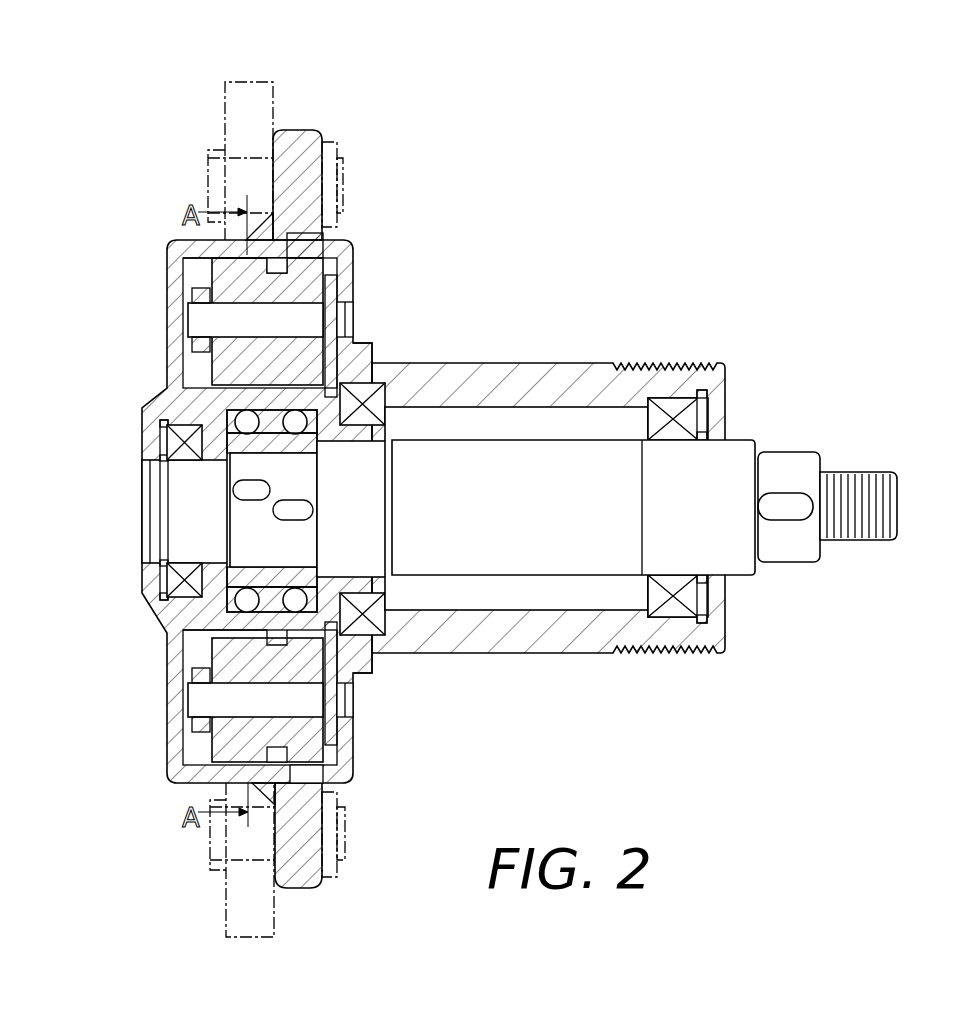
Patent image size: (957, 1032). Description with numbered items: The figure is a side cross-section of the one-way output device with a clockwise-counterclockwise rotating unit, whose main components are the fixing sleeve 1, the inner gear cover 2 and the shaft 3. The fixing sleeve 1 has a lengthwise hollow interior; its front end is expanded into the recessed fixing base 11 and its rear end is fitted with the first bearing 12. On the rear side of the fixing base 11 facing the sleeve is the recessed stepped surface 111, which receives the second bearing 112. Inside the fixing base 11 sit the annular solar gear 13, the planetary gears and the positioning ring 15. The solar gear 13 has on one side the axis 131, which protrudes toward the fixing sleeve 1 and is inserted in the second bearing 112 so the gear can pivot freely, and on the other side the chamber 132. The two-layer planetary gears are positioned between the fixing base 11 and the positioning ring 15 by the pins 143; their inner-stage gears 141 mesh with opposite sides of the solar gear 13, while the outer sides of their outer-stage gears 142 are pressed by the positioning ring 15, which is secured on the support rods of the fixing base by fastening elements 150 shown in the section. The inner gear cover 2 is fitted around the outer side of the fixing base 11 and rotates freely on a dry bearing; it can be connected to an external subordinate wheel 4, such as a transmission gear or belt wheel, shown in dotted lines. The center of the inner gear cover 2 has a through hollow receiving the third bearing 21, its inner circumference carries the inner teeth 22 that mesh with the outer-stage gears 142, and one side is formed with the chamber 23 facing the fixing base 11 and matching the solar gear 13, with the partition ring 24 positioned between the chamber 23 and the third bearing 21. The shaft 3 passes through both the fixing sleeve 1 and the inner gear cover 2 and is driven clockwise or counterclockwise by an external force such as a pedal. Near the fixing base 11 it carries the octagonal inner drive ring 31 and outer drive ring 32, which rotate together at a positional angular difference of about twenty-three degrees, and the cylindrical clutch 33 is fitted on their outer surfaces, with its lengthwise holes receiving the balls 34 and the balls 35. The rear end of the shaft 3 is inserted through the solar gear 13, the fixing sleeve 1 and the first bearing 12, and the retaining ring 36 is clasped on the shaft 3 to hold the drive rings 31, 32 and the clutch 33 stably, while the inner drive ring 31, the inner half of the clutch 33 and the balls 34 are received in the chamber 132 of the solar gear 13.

The fixing sleeve 1 is at (542, 373).
The inner gear cover 2 is at (178, 297).
The shaft 3 is at (573, 462).
The external subordinate wheel 4 is at (222, 134).
The fixing base 11 is at (347, 290).
The first bearing 12 is at (672, 405).
The solar gear 13 is at (342, 708).
The positioning ring 15 is at (200, 723).
The third bearing 21 is at (188, 437).
The inner teeth 22 is at (195, 267).
The chamber 23 is at (243, 410).
The partition ring 24 is at (215, 478).
The inner drive ring 31 is at (295, 597).
The outer drive ring 32 is at (232, 530).
The cylindrical clutch 33 is at (240, 628).
The ball 34 is at (315, 567).
The ball 35 is at (230, 603).
The retaining ring 36 is at (160, 423).
The stepped surface 111 is at (418, 370).
The second bearing 112 is at (362, 378).
The axis 131 is at (480, 372).
The chamber 132 is at (310, 612).
The inner-stage gear 141 is at (316, 240).
The outer-stage gear 142 is at (230, 257).
The pin 143 is at (352, 248).
The pin 150 is at (190, 320).